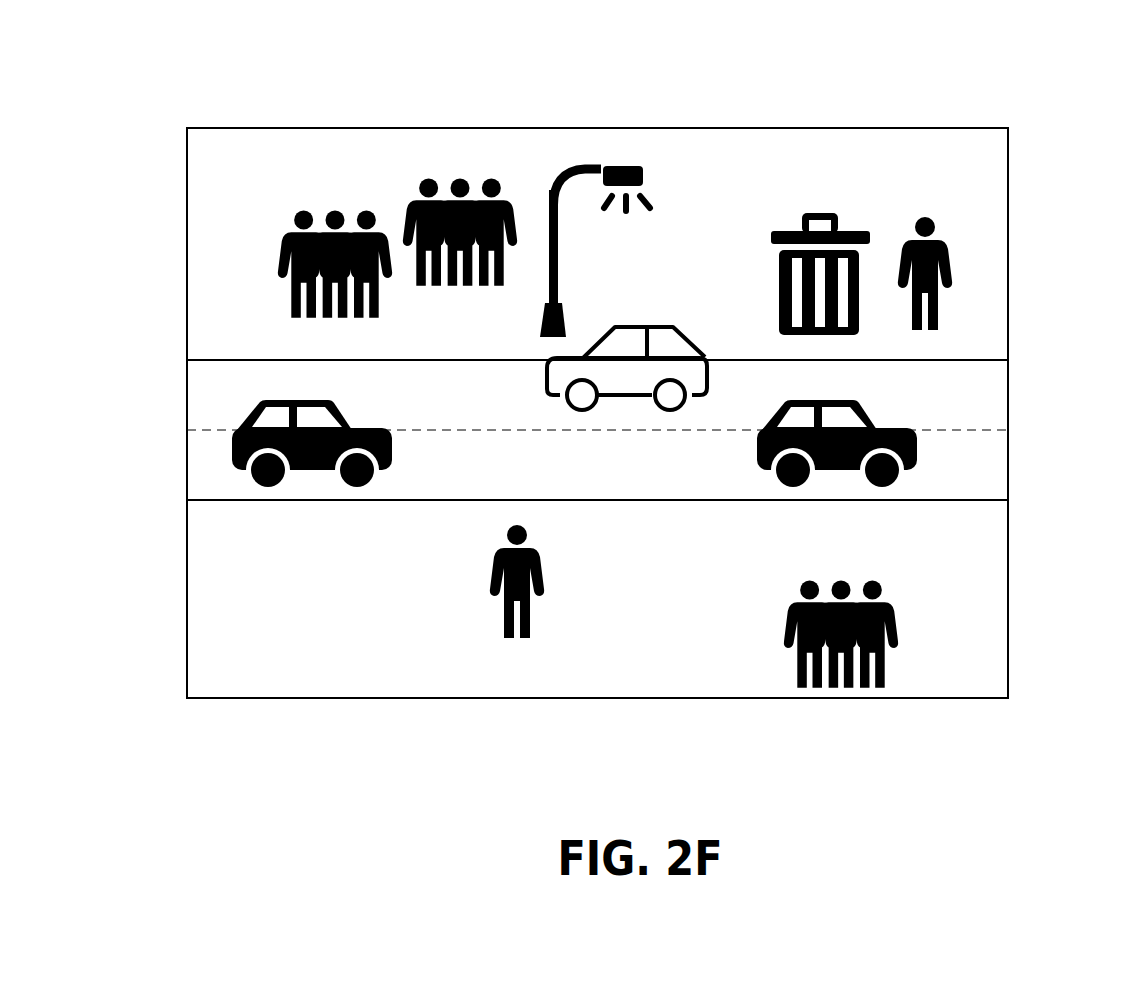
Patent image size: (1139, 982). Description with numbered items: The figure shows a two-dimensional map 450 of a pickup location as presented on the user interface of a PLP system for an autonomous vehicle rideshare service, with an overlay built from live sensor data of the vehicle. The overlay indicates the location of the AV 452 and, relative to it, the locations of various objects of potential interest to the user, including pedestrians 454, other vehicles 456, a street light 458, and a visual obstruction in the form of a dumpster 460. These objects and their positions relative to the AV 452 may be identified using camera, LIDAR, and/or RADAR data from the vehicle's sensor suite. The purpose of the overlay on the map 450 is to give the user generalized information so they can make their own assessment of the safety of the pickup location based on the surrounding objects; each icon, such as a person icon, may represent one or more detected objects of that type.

The 2D map 450 is at (1018, 156).
The AV 452 is at (646, 318).
The pedestrians 454 is at (264, 258).
The other vehicles 456 is at (917, 442).
The street light 458 is at (600, 163).
The dumpster 460 is at (818, 212).